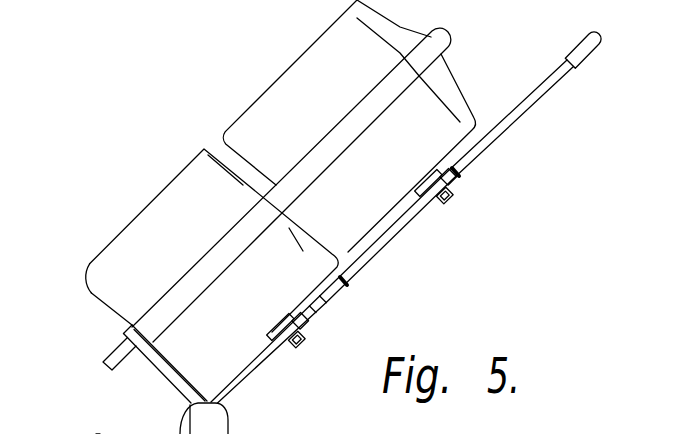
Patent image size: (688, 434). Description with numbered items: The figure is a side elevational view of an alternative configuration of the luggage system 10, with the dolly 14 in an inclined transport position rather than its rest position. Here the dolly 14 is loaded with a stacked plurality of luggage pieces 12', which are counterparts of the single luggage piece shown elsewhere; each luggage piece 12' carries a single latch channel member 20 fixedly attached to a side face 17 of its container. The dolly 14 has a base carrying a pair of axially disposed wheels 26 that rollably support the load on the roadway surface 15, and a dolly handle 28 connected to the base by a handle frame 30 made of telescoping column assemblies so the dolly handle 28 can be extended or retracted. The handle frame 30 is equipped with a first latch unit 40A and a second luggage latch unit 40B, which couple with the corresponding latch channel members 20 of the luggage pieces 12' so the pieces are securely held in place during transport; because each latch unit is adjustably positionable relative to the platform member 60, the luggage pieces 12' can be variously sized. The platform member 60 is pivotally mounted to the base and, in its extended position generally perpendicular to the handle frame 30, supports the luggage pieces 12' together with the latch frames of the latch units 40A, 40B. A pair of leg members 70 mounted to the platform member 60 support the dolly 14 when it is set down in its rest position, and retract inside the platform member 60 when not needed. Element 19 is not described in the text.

The luggage system 10 is at (412, 303).
The luggage pieces 12' is at (283, 166).
The dolly 14 is at (226, 408).
The roadway surface 15 is at (101, 428).
The side face 17 is at (323, 304).
The container bottom corner 19 is at (113, 308).
The latch channel member 20 is at (440, 160).
The wheels 26 is at (179, 422).
The dolly handle 28 is at (576, 45).
The handle frame 30 is at (381, 251).
The first latch unit 40A is at (288, 345).
The second luggage latch unit 40B is at (441, 206).
The platform member 60 is at (171, 383).
The leg members 70 is at (108, 353).